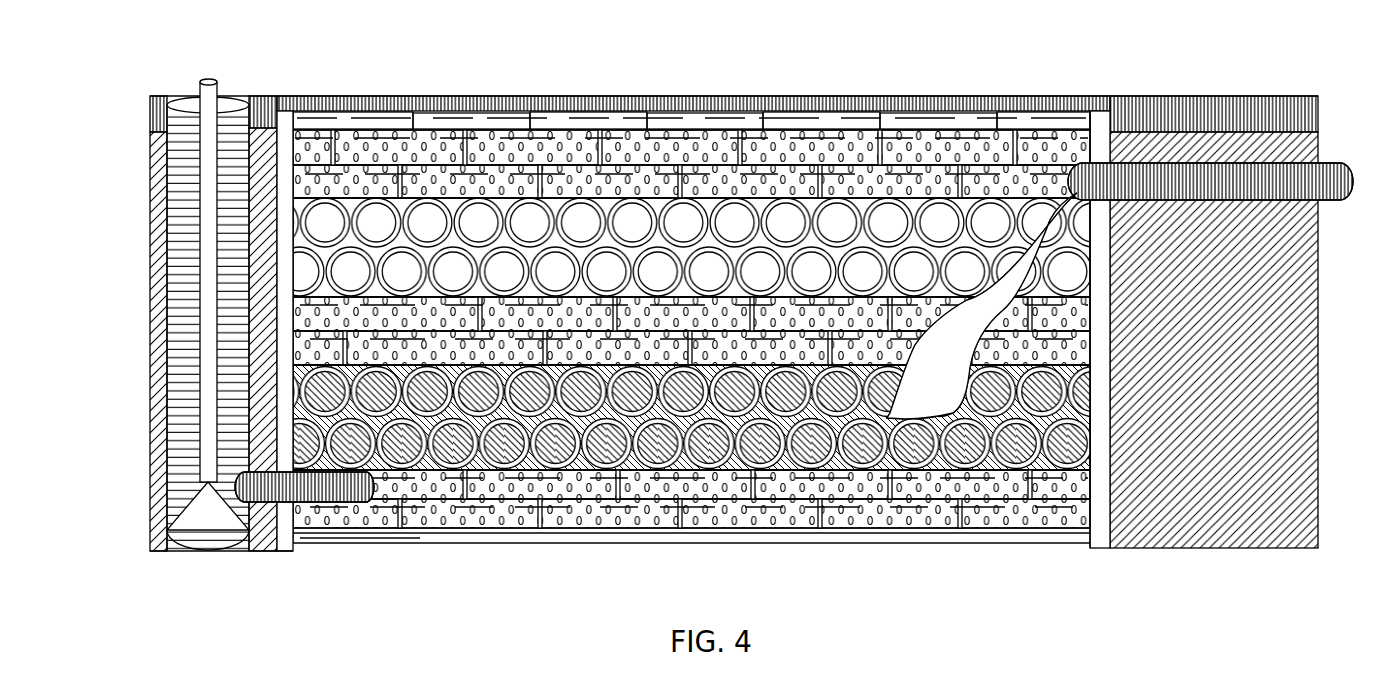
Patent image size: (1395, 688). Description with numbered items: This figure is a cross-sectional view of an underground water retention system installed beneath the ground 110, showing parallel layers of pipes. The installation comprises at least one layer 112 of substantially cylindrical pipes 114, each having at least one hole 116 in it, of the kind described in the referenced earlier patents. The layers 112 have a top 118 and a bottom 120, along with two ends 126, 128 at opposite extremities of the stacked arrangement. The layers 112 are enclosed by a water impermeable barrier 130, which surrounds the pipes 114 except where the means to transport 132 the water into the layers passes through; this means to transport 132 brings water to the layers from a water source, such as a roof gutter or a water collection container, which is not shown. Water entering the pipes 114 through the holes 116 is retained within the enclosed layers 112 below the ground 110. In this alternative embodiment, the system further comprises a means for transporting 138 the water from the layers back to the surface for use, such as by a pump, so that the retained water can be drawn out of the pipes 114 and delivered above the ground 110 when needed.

The ground 110 is at (643, 112).
The layer 112 is at (305, 313).
The substantially cylindrical pipes 114 is at (455, 447).
The hole 116 is at (580, 515).
The top 118 is at (803, 115).
The bottom 120 is at (695, 545).
The end 126 is at (217, 393).
The end 128 is at (1247, 410).
The water impermeable barrier 130 is at (1103, 108).
The means to transport 132 is at (1195, 110).
The means for transporting 138 is at (207, 183).